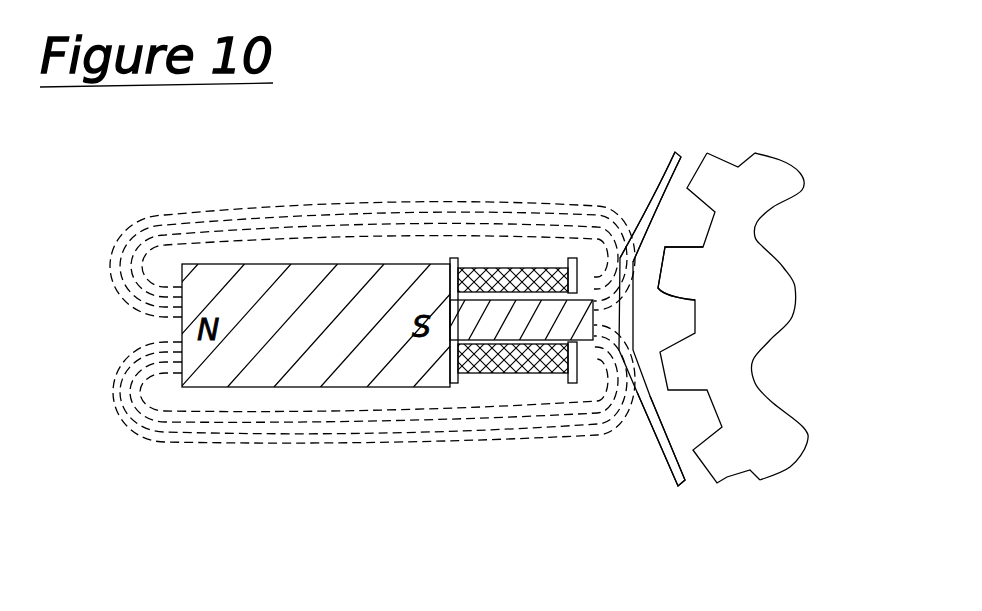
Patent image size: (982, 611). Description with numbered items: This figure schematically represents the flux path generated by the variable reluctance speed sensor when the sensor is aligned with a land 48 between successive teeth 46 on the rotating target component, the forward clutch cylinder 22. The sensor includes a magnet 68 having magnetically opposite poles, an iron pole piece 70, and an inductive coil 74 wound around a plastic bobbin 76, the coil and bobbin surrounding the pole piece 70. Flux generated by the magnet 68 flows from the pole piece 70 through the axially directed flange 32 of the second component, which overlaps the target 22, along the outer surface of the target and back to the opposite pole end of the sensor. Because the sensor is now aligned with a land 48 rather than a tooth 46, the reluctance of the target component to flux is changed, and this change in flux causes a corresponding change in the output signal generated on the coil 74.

The magnet 68 is at (265, 263).
The pole piece 70 is at (498, 267).
The inductive coil 74 is at (557, 267).
The bobbin 76 is at (572, 383).
The axially directed flange 32 is at (658, 183).
The spline teeth 46 is at (718, 183).
The forward clutch cylinder 22 is at (760, 187).
The land 48 is at (670, 287).